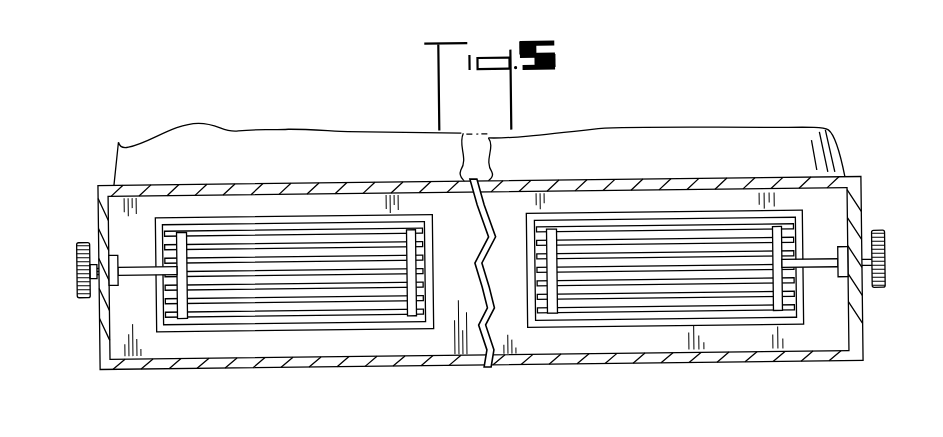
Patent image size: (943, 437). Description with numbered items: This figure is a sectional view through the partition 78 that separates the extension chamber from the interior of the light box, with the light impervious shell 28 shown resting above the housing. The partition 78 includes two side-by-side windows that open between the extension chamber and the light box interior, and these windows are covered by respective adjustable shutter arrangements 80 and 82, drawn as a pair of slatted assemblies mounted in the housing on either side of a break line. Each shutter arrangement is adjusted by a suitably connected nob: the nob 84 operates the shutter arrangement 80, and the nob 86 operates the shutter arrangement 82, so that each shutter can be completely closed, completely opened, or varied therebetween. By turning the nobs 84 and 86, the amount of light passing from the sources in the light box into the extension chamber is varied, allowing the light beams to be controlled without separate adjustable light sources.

The light impervious shell 28 is at (788, 147).
The partition 78 is at (150, 343).
The adjustable shutter arrangement 80 is at (295, 311).
The adjustable shutter arrangement 82 is at (620, 310).
The nob 84 is at (84, 237).
The nob 86 is at (879, 235).